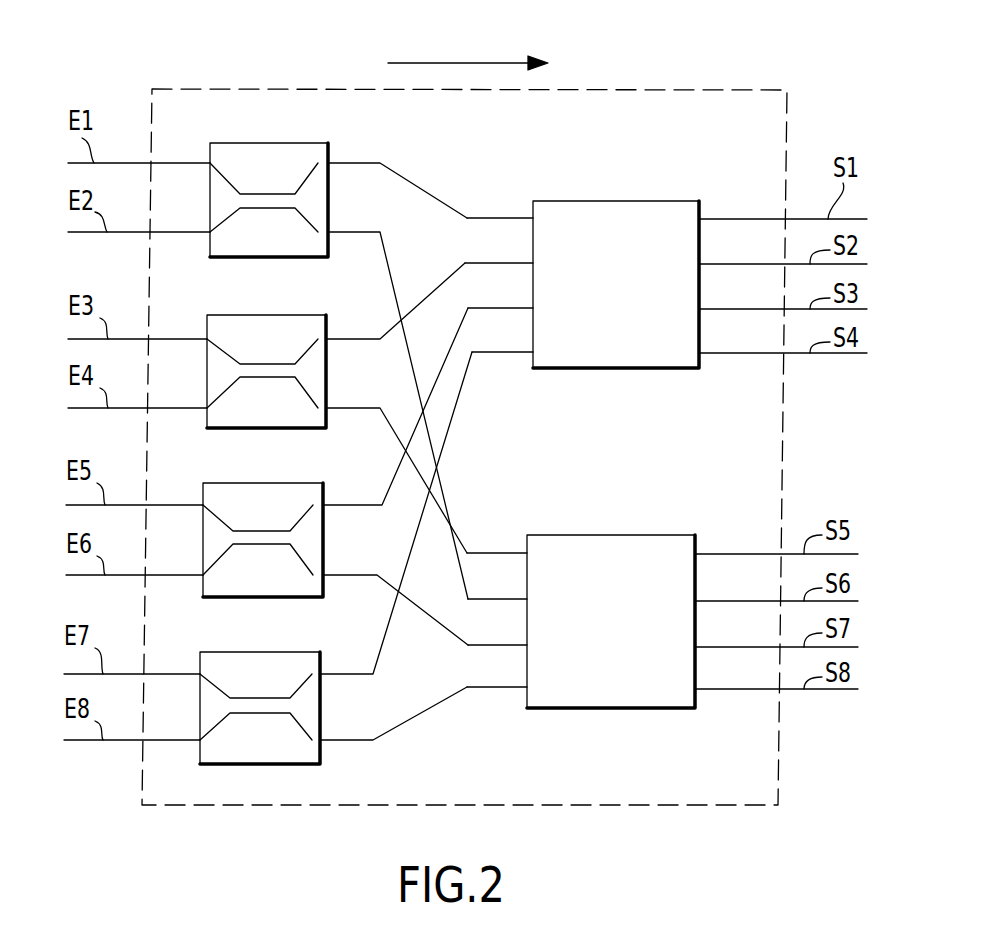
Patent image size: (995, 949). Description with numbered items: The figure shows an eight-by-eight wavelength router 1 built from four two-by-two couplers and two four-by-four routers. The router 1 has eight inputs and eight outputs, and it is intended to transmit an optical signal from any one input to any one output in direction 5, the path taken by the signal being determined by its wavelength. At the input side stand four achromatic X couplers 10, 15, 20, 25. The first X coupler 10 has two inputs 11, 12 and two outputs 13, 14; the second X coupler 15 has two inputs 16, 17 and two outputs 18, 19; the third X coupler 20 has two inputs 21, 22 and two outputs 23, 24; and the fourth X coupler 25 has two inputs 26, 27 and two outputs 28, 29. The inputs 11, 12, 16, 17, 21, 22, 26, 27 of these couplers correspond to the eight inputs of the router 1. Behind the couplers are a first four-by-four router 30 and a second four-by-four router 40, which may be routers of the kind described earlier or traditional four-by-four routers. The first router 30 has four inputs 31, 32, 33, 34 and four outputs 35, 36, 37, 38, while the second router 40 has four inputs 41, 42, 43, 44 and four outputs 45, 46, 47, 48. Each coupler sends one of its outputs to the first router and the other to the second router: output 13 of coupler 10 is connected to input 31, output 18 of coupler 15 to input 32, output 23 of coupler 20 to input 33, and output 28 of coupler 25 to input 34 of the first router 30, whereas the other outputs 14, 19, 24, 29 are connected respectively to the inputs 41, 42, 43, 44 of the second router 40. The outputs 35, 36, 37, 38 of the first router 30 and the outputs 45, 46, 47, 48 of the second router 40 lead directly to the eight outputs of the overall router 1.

The 8×8 router 1 is at (608, 90).
The direction 5 is at (457, 63).
The achromatic X coupler 10 is at (233, 143).
The input 11 is at (180, 163).
The input 12 is at (181, 232).
The output 13 is at (362, 163).
The output 14 is at (346, 232).
The achromatic X coupler 15 is at (260, 315).
The input 16 is at (178, 339).
The input 17 is at (178, 408).
The output 18 is at (345, 339).
The output 19 is at (345, 408).
The achromatic X coupler 20 is at (258, 483).
The input 21 is at (175, 505).
The input 22 is at (175, 575).
The output 23 is at (343, 505).
The output 24 is at (343, 575).
The achromatic X coupler 25 is at (256, 652).
The input 26 is at (170, 674).
The input 27 is at (170, 740).
The output 28 is at (338, 674).
The output 29 is at (338, 740).
The first 4×4 router 30 is at (620, 201).
The input 31 is at (480, 218).
The input 32 is at (503, 263).
The input 33 is at (503, 308).
The input 34 is at (503, 352).
The output 35 is at (757, 219).
The output 36 is at (722, 264).
The output 37 is at (722, 309).
The output 38 is at (722, 353).
The second 4×4 router 40 is at (614, 535).
The input 41 is at (508, 553).
The input 42 is at (508, 599).
The input 43 is at (508, 645).
The input 44 is at (508, 687).
The output 45 is at (715, 554).
The output 46 is at (715, 601).
The output 47 is at (715, 647).
The output 48 is at (715, 689).